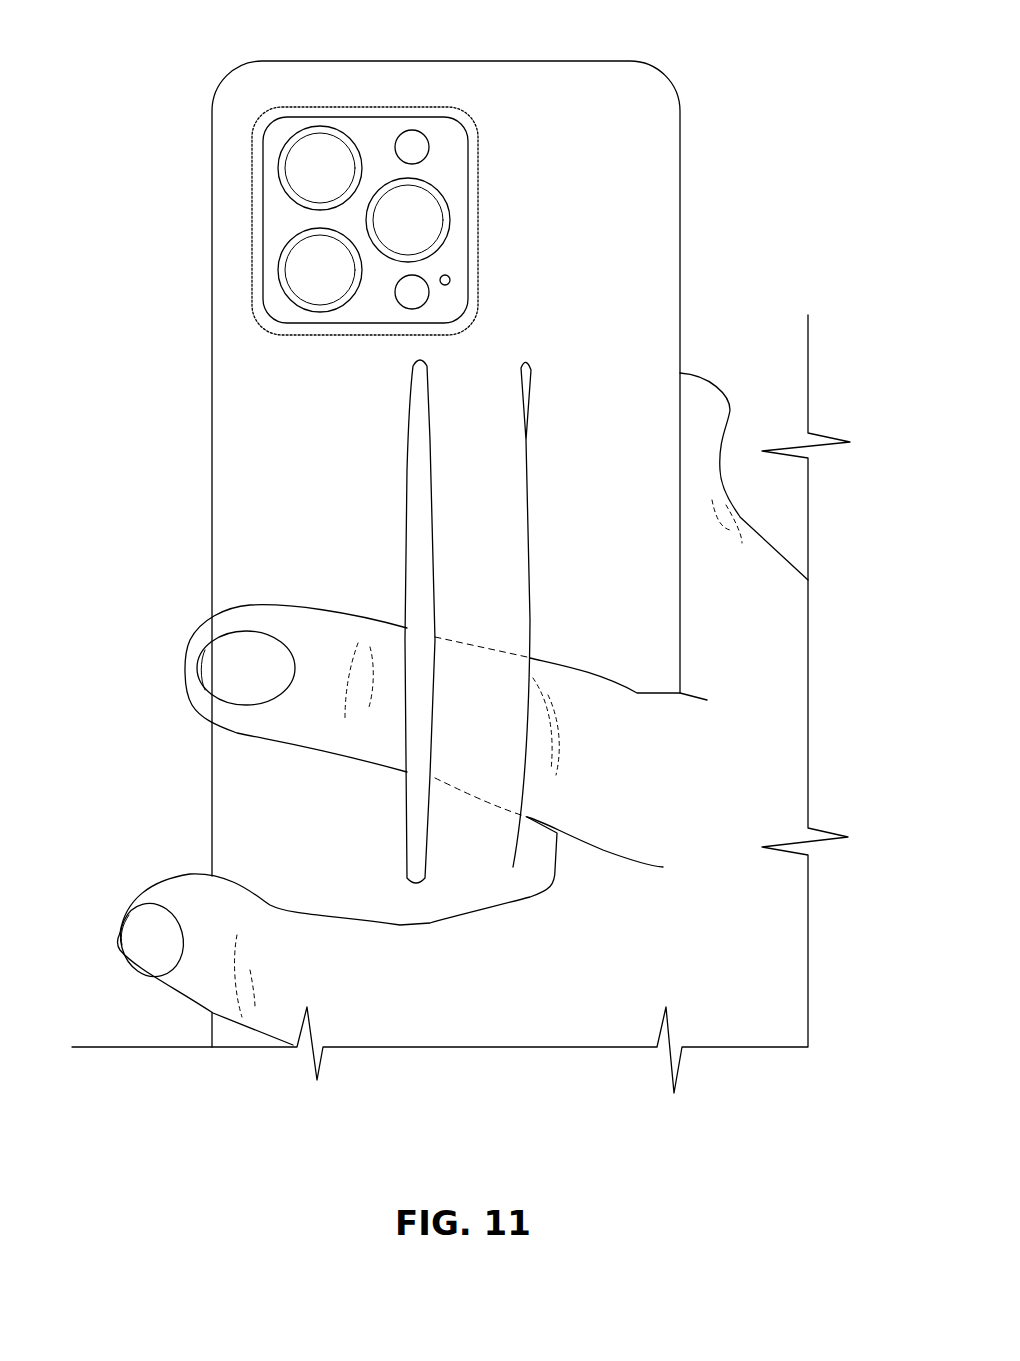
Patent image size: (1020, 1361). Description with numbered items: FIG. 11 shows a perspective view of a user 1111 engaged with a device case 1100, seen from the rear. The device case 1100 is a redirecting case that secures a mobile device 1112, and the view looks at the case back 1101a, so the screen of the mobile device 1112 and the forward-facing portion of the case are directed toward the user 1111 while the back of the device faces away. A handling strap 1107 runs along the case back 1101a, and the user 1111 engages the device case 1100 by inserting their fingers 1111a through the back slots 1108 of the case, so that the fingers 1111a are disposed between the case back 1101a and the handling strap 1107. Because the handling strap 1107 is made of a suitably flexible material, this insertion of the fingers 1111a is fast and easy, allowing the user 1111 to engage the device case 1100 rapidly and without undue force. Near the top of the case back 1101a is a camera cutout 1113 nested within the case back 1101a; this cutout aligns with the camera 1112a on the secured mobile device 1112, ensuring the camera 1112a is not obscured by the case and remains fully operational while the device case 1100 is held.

The device case 1100 is at (425, 532).
The case back 1101a is at (592, 313).
The handling strap 1107 is at (502, 500).
The back slots 1108 is at (476, 621).
The user 1111 is at (461, 757).
The fingers 1111a is at (377, 705).
The mobile device 1112 is at (305, 170).
The camera 1112a is at (343, 130).
The camera cutout 1113 is at (478, 153).